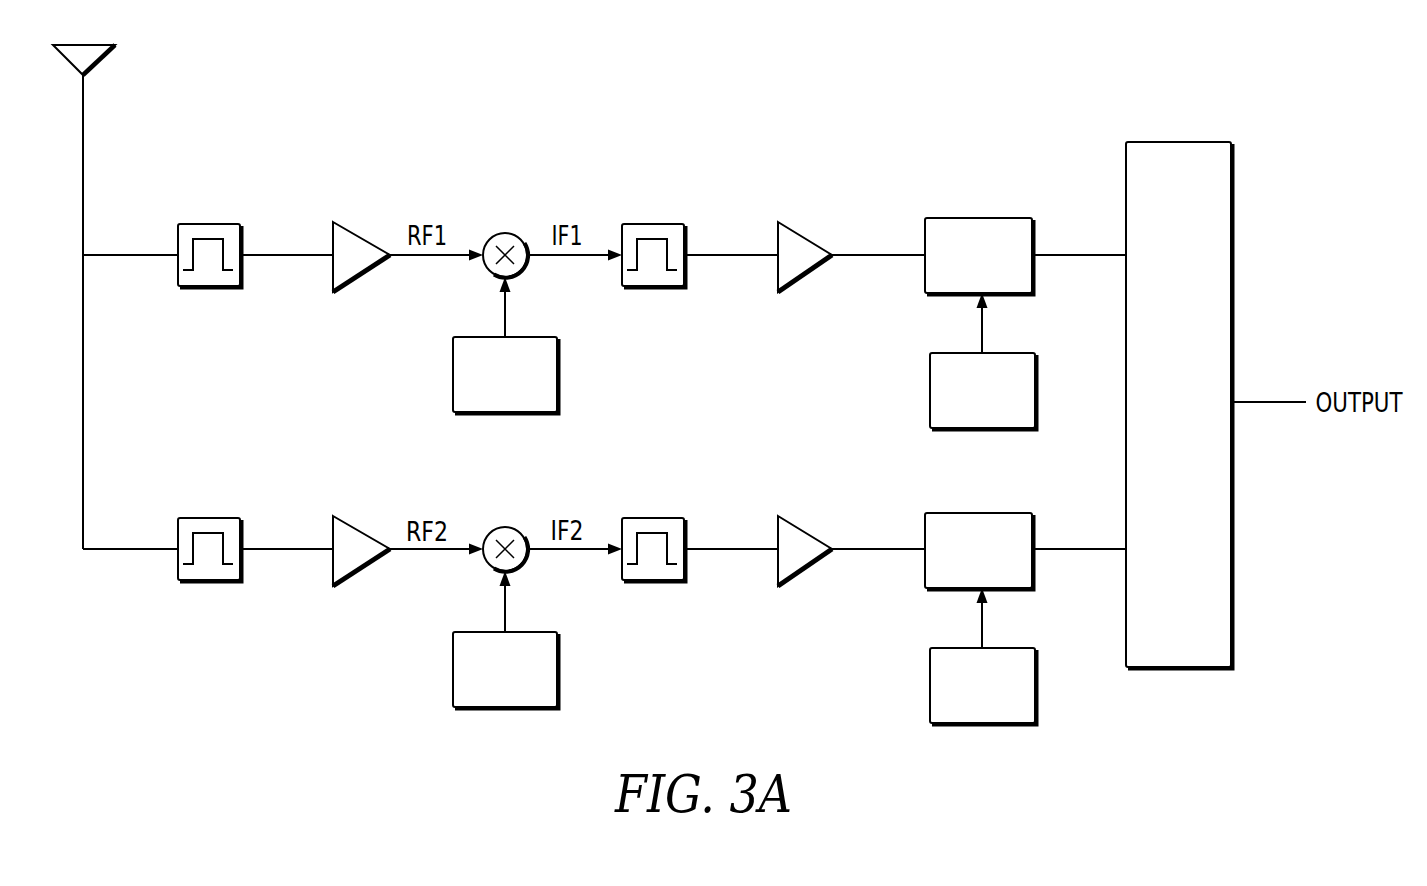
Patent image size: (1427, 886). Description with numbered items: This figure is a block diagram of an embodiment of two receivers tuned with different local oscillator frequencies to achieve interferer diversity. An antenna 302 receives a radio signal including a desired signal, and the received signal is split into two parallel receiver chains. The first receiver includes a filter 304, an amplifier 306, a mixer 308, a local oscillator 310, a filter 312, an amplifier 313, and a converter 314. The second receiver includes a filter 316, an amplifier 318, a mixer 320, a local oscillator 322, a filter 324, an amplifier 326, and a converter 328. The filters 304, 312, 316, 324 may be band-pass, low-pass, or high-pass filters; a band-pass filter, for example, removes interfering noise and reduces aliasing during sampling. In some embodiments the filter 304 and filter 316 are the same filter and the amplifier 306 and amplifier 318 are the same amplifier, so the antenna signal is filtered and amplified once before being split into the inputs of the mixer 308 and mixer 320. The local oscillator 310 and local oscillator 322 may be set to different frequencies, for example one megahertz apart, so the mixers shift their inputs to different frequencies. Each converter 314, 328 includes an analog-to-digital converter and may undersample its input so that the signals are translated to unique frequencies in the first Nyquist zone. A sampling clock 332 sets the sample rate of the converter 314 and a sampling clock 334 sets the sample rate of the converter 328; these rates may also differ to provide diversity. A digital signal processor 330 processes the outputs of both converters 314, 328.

The antenna 302 is at (102, 60).
The filter 304 is at (209, 223).
The amplifier 306 is at (362, 233).
The mixer 308 is at (505, 232).
The local oscillator 310 is at (452, 372).
The filter 312 is at (653, 223).
The amplifier 313 is at (805, 236).
The converter 314 is at (978, 217).
The filter 316 is at (209, 517).
The amplifier 318 is at (362, 528).
The mixer 320 is at (504, 526).
The local oscillator 322 is at (452, 668).
The filter 324 is at (653, 517).
The amplifier 326 is at (805, 530).
The converter 328 is at (978, 512).
The digital signal processor 330 is at (1143, 141).
The sampling clock 332 is at (929, 390).
The sampling clock 334 is at (929, 688).